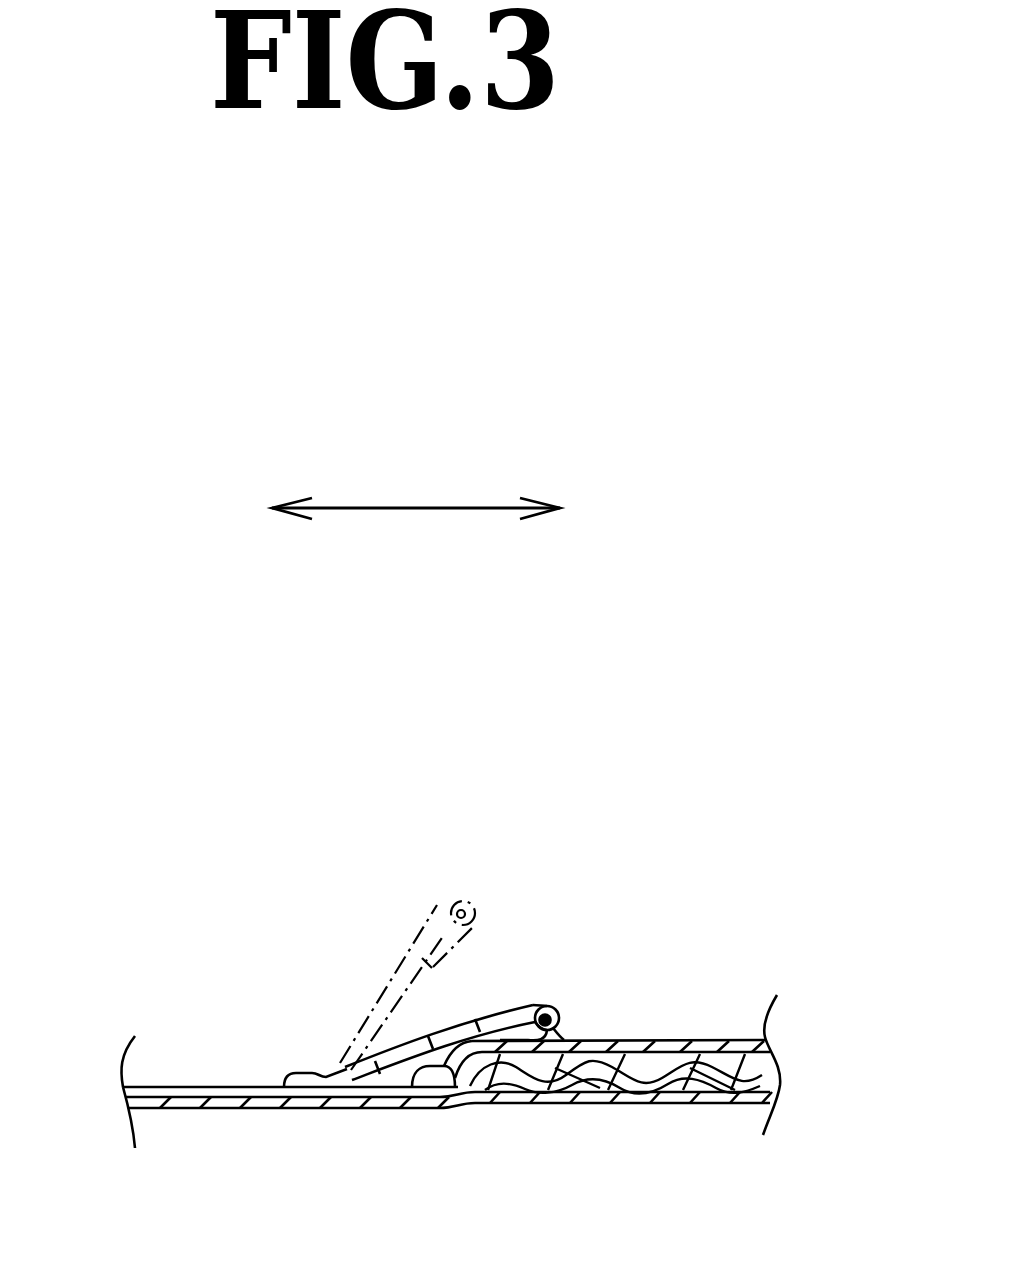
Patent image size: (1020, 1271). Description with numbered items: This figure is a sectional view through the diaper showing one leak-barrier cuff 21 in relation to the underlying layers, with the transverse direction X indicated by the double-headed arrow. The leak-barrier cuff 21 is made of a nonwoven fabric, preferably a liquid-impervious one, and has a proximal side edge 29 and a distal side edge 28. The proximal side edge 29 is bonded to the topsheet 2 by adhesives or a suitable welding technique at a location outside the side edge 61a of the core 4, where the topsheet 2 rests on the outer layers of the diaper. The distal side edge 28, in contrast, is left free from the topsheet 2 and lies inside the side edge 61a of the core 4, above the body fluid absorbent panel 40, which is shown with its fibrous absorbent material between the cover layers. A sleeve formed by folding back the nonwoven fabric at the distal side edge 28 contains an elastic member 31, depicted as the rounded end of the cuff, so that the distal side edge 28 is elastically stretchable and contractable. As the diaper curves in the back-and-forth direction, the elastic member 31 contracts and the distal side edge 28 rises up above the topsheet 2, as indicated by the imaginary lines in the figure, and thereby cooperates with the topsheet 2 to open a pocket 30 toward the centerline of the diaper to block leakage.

The topsheet 2 is at (177, 1086).
The core 4 is at (587, 1090).
The leak-barrier cuff 21 is at (337, 910).
The distal side edge 28 is at (430, 917).
The proximal side edge 29 is at (296, 1072).
The pocket 30 is at (433, 997).
The elastic member 31 is at (558, 1018).
The body fluid absorbent panel 40 is at (716, 1040).
The side edge of the core 61a is at (410, 1086).
The transverse direction X is at (388, 507).